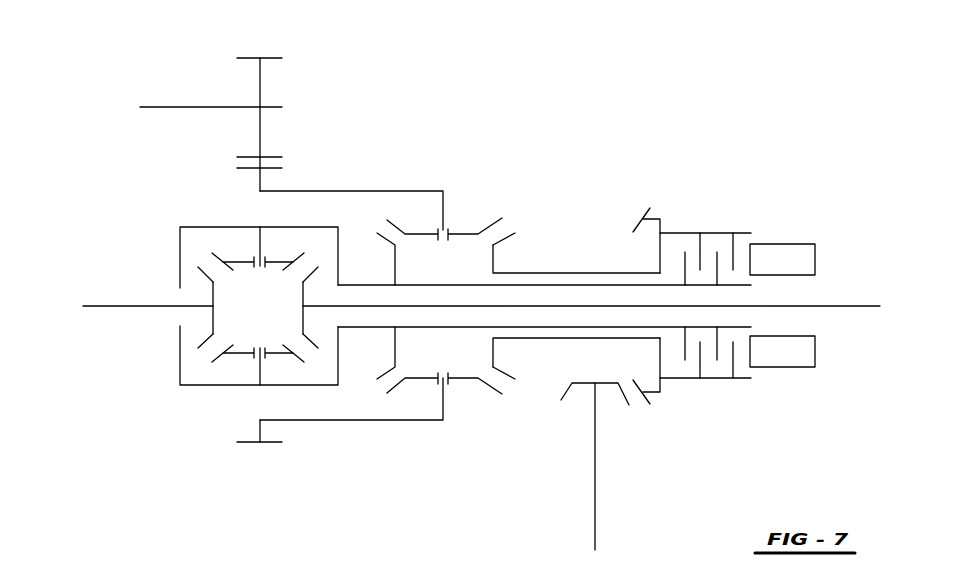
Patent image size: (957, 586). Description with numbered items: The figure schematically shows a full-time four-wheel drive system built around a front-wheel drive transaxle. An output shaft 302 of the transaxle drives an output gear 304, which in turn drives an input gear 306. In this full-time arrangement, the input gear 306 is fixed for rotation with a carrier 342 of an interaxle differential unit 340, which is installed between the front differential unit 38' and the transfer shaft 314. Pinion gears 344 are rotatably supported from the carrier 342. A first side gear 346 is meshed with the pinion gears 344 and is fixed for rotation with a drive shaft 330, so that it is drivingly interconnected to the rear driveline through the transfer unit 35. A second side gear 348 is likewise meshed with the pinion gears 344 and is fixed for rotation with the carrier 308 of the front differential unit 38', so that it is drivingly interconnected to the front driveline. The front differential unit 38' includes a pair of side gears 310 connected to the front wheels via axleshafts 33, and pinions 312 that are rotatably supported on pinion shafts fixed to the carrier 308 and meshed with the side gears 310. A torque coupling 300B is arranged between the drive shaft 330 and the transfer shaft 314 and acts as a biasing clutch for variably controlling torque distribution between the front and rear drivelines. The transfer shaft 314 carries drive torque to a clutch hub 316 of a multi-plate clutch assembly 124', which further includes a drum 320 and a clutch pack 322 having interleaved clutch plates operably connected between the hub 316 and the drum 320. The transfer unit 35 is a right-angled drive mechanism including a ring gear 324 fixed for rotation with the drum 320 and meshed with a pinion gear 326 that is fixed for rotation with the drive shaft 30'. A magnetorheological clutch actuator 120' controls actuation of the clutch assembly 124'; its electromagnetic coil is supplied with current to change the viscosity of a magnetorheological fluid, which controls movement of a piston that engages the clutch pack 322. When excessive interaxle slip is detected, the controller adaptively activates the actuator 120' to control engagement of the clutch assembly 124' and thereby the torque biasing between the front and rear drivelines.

The axleshafts 33 is at (110, 305).
The output shaft 302 is at (178, 107).
The output gear 304 is at (273, 57).
The input gear 306 is at (272, 445).
The carrier 308 is at (202, 226).
The side gears 310 is at (214, 291).
The pinions 312 is at (270, 258).
The front differential unit 38' is at (160, 436).
The clutch hub 316 is at (705, 286).
The carrier 342 is at (352, 190).
The interaxle differential unit 340 is at (465, 275).
The pinion gears 344 is at (426, 238).
The first side gear 346 is at (495, 254).
The second side gear 348 is at (397, 345).
The transfer shaft 314 is at (538, 327).
The drive shaft 330 is at (579, 273).
The drum 320 is at (740, 378).
The ring gear 324 is at (643, 212).
The clutch pack 322 is at (692, 248).
The clutch assembly 124' is at (747, 199).
The torque coupling 300B is at (809, 181).
The magnetorheological clutch actuator 120' is at (835, 295).
The pinion gear 326 is at (570, 395).
The drive shaft 30' is at (629, 466).
The transfer unit 35 is at (565, 480).